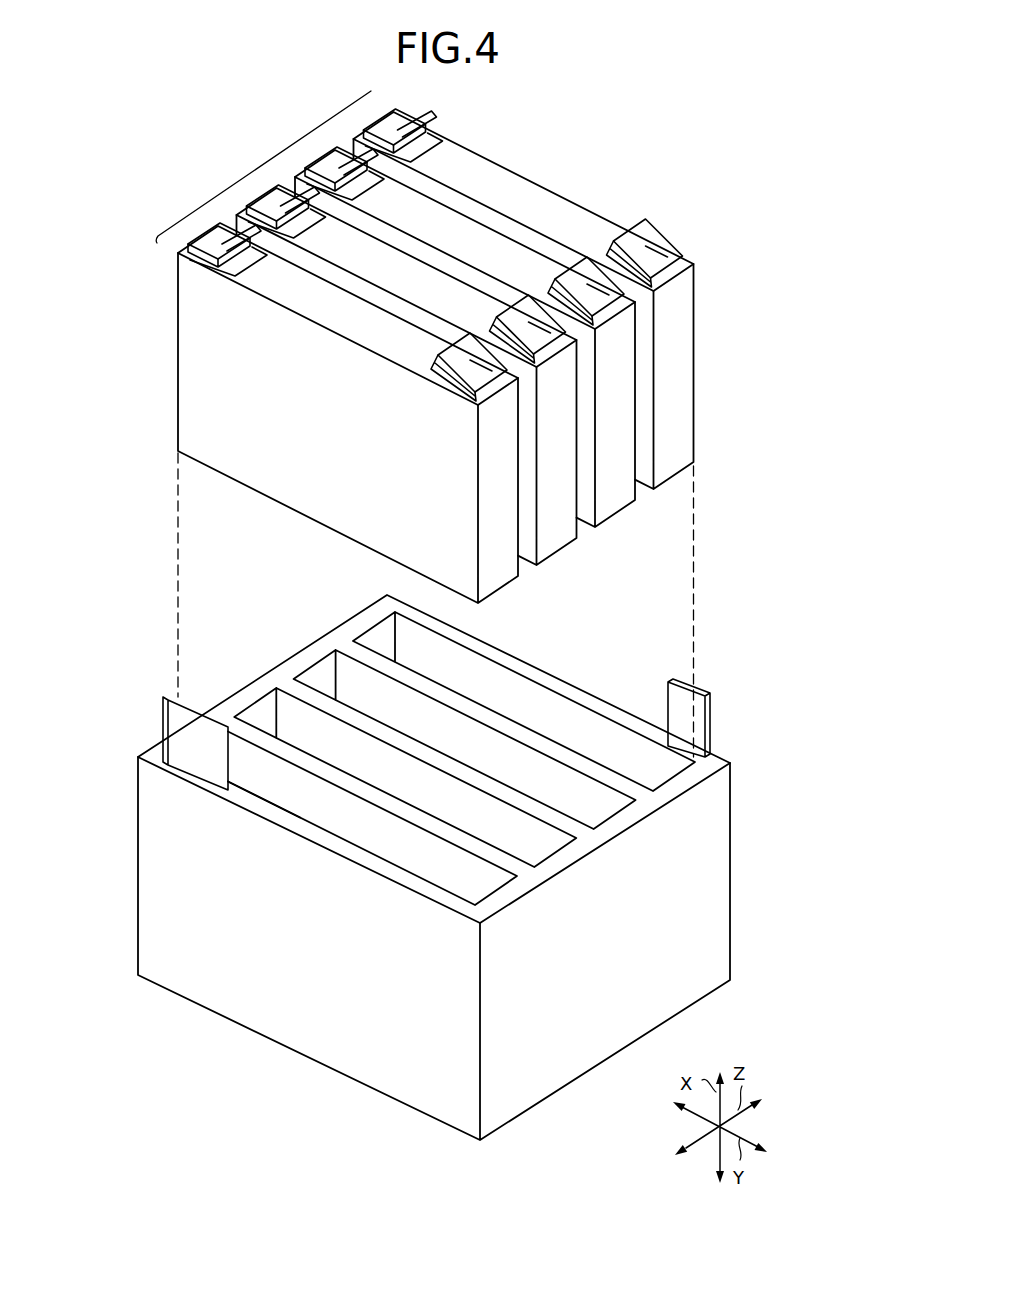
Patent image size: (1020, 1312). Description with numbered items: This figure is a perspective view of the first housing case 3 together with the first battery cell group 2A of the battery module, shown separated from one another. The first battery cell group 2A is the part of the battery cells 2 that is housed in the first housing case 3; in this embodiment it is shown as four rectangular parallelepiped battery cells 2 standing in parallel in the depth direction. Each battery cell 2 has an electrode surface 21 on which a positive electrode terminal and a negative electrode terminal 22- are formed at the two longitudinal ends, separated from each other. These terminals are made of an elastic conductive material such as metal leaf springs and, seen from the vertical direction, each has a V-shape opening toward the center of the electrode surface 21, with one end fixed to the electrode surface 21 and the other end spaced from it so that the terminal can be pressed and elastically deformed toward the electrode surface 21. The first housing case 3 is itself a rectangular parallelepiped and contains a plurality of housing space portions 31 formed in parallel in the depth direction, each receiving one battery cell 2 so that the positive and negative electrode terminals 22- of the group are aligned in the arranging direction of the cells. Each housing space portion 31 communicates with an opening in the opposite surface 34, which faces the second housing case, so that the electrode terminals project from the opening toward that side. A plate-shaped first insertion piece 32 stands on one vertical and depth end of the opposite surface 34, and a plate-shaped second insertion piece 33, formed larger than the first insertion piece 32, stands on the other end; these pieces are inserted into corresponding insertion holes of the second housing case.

The battery cell 2 is at (476, 434).
The first battery cell group 2A is at (284, 153).
The electrode surface 21 is at (352, 315).
The negative electrode terminal 22- is at (232, 236).
The first housing case 3 is at (438, 867).
The housing space portion 31 is at (467, 883).
The first insertion piece 32 is at (705, 718).
The second insertion piece 33 is at (182, 725).
The opposite surface 34 is at (270, 808).